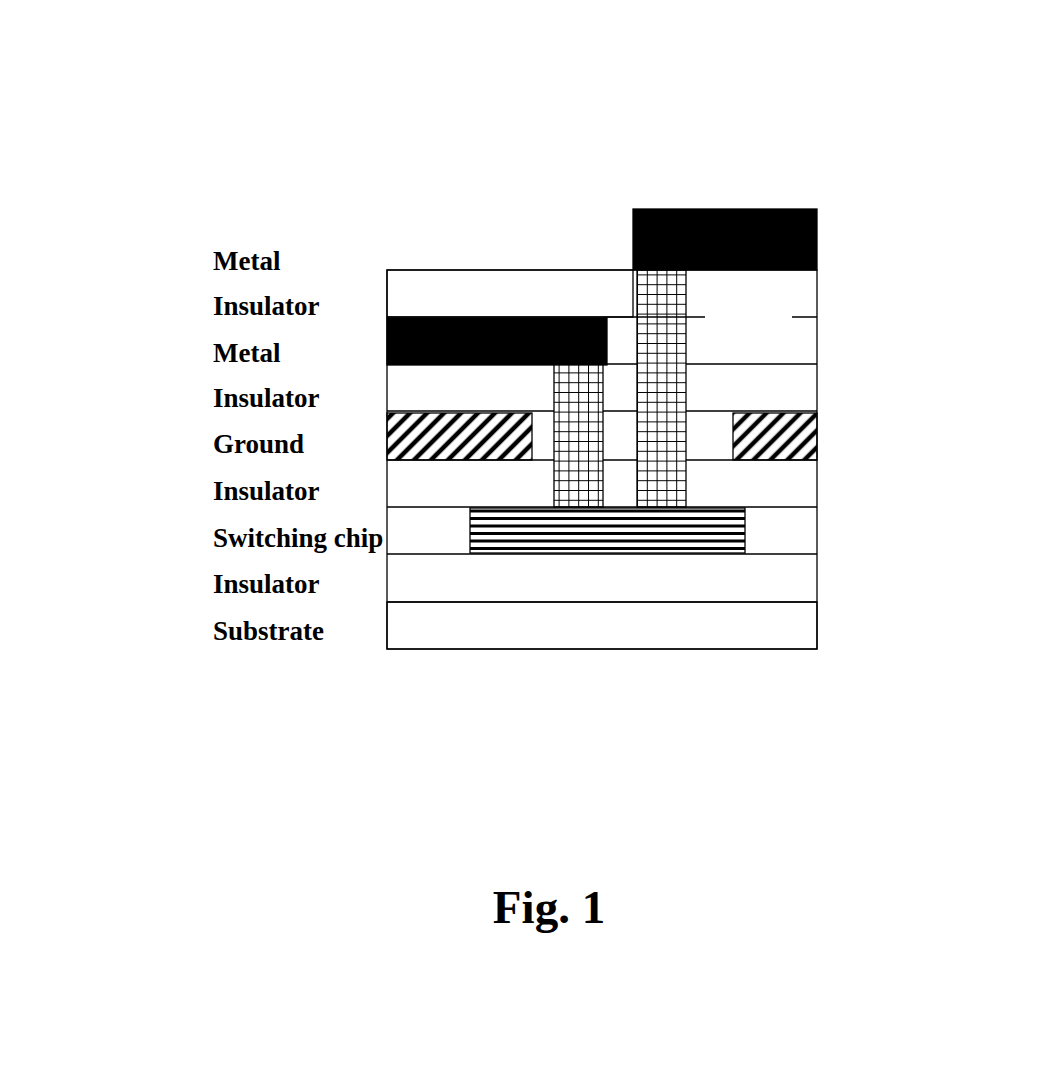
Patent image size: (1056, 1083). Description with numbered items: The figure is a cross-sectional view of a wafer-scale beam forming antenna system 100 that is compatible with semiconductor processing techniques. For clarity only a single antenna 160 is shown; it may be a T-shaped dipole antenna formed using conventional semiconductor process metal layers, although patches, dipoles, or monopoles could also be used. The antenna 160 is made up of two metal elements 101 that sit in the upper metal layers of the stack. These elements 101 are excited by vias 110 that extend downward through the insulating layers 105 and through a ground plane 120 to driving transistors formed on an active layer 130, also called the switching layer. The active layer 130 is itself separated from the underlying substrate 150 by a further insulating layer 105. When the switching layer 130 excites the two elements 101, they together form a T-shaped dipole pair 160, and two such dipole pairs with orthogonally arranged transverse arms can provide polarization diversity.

The beam forming antenna system 100 is at (562, 50).
The elements 101 is at (382, 342).
The insulating layers 105 is at (817, 292).
The vias 110 is at (685, 353).
The ground plane 120 is at (817, 433).
The active layer 130 is at (745, 531).
The substrate 150 is at (601, 649).
The antenna 160 is at (488, 308).